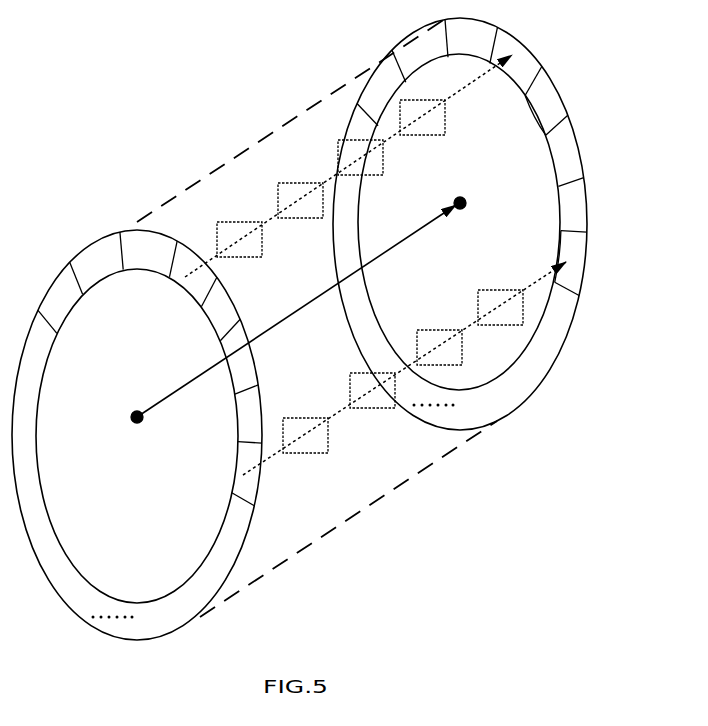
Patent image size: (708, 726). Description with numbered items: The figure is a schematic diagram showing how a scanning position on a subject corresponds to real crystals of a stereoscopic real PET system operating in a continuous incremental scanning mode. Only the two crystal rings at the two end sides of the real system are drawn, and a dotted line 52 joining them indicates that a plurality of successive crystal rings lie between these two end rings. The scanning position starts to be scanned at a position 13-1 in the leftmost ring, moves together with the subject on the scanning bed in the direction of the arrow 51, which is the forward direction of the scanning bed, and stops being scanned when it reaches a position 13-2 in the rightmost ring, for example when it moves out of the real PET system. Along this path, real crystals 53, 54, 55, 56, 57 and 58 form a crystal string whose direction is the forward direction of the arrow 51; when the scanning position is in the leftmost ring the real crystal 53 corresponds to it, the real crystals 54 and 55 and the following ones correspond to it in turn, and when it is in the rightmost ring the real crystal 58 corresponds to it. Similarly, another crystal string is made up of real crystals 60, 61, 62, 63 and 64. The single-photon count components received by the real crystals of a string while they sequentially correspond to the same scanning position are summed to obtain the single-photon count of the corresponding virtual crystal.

The starting position of scanning position 13-1 is at (143, 410).
The ending position of scanning position 13-2 is at (462, 200).
The arrow 51 is at (275, 327).
The dotted line 52 is at (223, 167).
The real crystal 53 is at (185, 277).
The real crystal 54 is at (242, 258).
The real crystal 55 is at (303, 208).
The real crystal 56 is at (377, 173).
The real crystal 57 is at (415, 132).
The real crystal 58 is at (522, 57).
The real crystal 60 is at (233, 462).
The real crystal 61 is at (323, 448).
The real crystal 62 is at (378, 402).
The real crystal 63 is at (453, 348).
The real crystal 64 is at (575, 272).